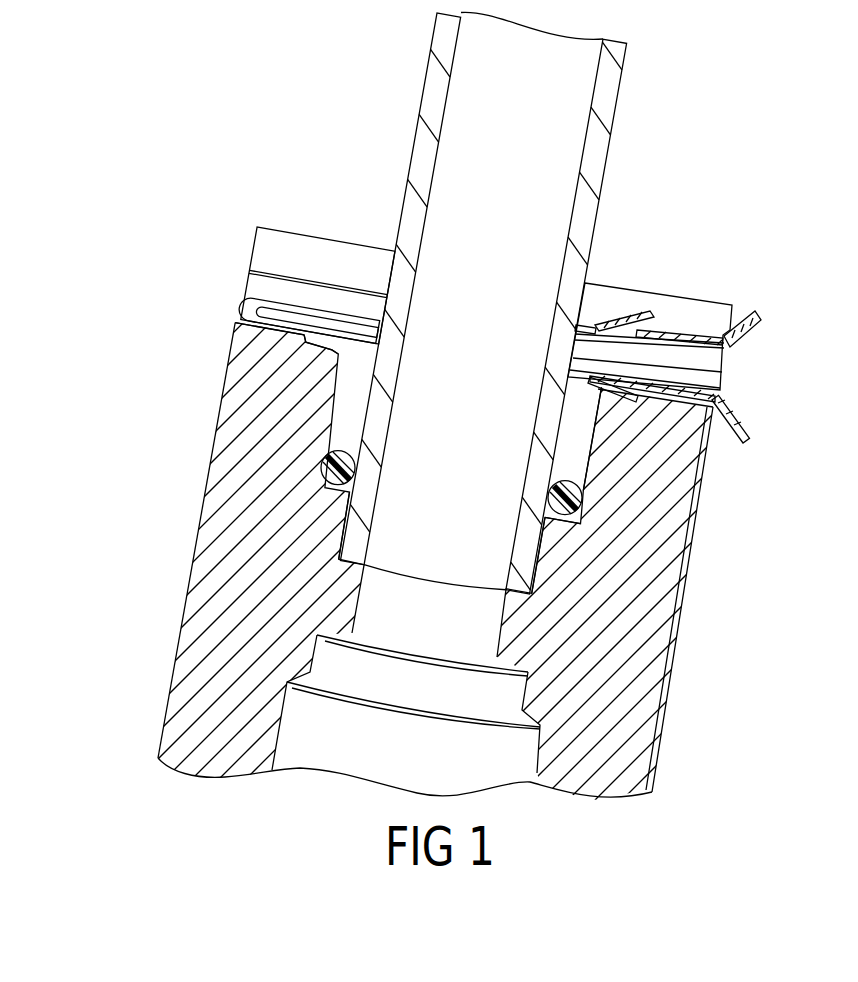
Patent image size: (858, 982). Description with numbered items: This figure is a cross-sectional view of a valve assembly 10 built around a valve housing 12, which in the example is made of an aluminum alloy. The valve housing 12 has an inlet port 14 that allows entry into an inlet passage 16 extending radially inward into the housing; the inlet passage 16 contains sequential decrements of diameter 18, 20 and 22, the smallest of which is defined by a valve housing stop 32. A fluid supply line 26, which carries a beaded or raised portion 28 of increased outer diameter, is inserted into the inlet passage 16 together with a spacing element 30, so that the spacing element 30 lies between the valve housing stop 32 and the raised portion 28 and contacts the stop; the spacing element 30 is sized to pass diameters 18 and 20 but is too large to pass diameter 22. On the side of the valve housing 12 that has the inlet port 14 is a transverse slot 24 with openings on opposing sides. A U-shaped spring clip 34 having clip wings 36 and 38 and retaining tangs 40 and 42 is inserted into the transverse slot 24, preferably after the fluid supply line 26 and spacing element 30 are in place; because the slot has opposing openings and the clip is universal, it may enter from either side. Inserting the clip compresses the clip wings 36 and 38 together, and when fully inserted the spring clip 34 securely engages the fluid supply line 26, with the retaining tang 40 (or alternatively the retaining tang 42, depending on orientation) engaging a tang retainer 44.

The valve assembly 10 is at (172, 223).
The valve housing 12 is at (190, 580).
The inlet port 14 is at (343, 330).
The inlet passage 16 is at (310, 344).
The diameter 18 is at (310, 348).
The diameter 20 is at (323, 461).
The diameter 22 is at (337, 528).
The transverse slot 24 is at (247, 288).
The fluid supply line 26 is at (420, 107).
The raised portion 28 is at (593, 500).
The spacing element 30 is at (580, 500).
The valve housing stop 32 is at (573, 523).
The spring clip 34 is at (683, 332).
The clip wing 36 is at (757, 316).
The clip wing 38 is at (746, 441).
The retaining tang 40 is at (627, 403).
The retaining tang 42 is at (627, 313).
The tang retainer 44 is at (597, 407).